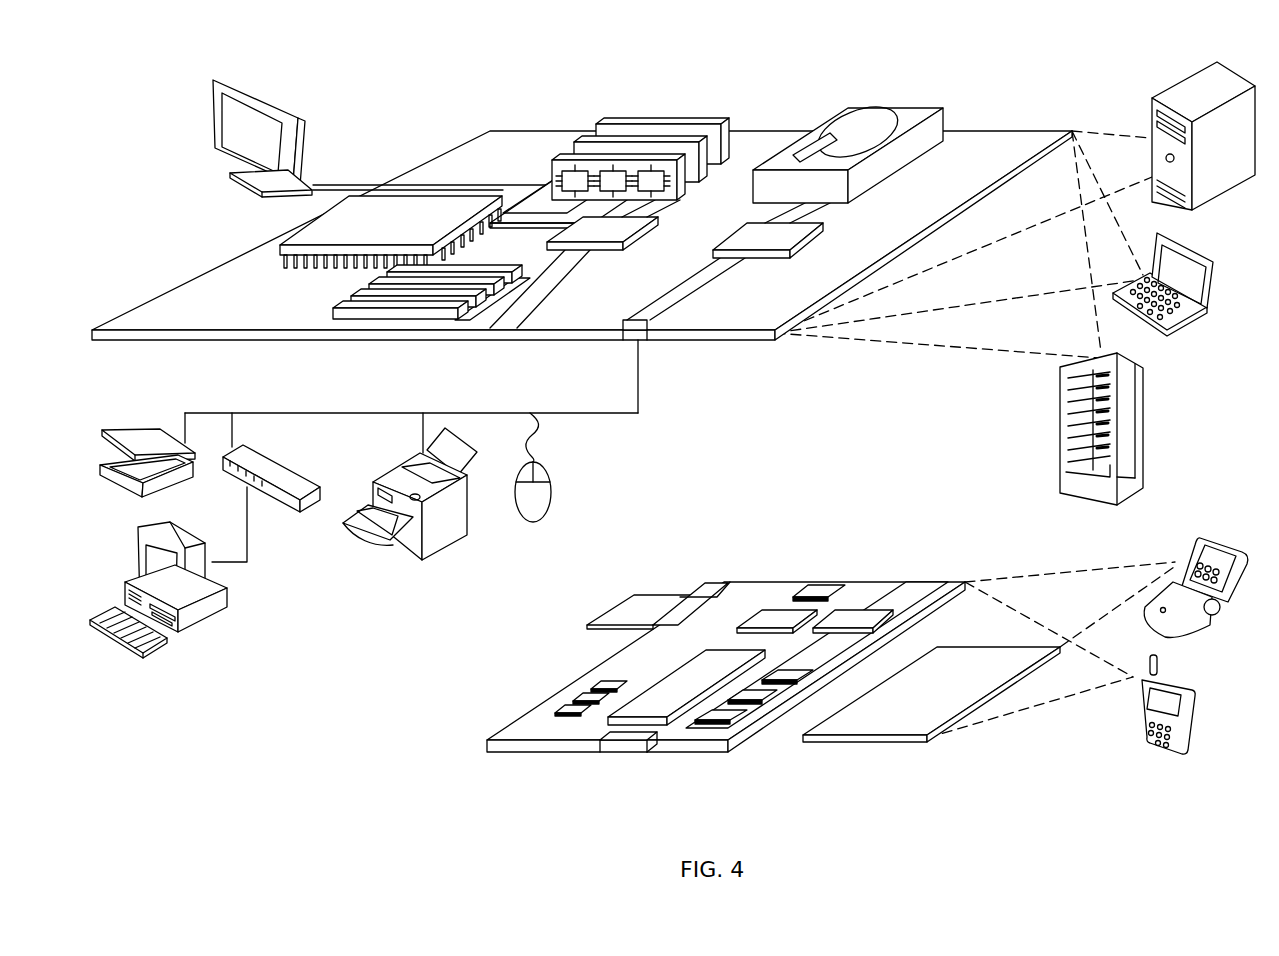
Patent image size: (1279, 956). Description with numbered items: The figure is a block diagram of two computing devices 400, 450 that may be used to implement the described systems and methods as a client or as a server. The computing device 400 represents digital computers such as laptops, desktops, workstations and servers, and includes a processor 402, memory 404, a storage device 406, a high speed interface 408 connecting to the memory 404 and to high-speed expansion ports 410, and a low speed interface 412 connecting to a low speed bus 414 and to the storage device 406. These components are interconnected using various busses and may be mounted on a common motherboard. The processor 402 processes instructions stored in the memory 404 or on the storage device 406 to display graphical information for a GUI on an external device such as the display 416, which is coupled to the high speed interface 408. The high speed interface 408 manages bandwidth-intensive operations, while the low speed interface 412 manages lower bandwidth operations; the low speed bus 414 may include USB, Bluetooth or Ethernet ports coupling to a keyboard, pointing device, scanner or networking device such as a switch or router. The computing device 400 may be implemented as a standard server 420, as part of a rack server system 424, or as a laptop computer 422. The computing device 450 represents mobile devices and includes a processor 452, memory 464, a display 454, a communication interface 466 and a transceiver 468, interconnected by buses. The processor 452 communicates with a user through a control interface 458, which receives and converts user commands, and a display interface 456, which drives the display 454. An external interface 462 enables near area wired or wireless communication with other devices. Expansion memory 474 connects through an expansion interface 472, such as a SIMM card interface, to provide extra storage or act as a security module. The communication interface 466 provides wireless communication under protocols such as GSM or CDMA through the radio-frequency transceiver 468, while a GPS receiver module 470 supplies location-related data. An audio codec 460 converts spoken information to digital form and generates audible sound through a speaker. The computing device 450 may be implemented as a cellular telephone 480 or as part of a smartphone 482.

The computing device 400 is at (682, 351).
The processor 402 is at (287, 246).
The memory 404 is at (606, 127).
The storage device 406 is at (838, 114).
The high speed interface 408 is at (576, 228).
The high-speed expansion ports 410 is at (351, 300).
The low speed interface 412 is at (753, 232).
The low speed bus 414 is at (688, 340).
The display 416 is at (212, 78).
The standard server 420 is at (1154, 118).
The laptop computer 422 is at (1209, 263).
The rack server system 424 is at (1060, 454).
The computing device 450 is at (821, 663).
The processor 452 is at (662, 705).
The display 454 is at (893, 725).
The display interface 456 is at (730, 711).
The control interface 458 is at (770, 693).
The audio codec 460 is at (789, 675).
The external interface 462 is at (628, 742).
The memory 464 is at (579, 704).
The communication interface 466 is at (788, 621).
The transceiver 468 is at (850, 614).
The GPS receiver module 470 is at (838, 592).
The expansion interface 472 is at (706, 597).
The expansion memory 474 is at (640, 599).
The cellular telephone 480 is at (1195, 546).
The smartphone 482 is at (1143, 713).